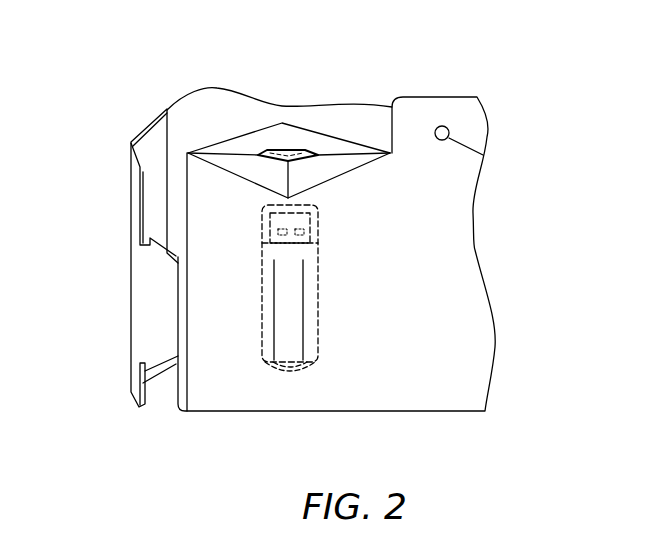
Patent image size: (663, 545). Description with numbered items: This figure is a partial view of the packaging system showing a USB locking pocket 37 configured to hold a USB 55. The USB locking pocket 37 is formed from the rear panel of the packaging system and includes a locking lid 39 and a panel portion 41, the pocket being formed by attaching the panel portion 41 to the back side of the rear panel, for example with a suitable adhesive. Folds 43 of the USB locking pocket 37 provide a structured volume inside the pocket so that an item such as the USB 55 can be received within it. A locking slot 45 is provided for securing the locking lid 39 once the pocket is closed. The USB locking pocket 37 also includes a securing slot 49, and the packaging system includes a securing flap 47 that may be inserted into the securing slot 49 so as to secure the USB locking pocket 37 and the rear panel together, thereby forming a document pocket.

The USB locking pocket 37 is at (118, 104).
The locking lid 39 is at (353, 162).
The panel portion 41 is at (288, 124).
The folds 43 is at (330, 185).
The locking slot 45 is at (320, 150).
The securing flap 47 is at (142, 310).
The securing slot 49 is at (303, 347).
The USB 55 is at (318, 333).